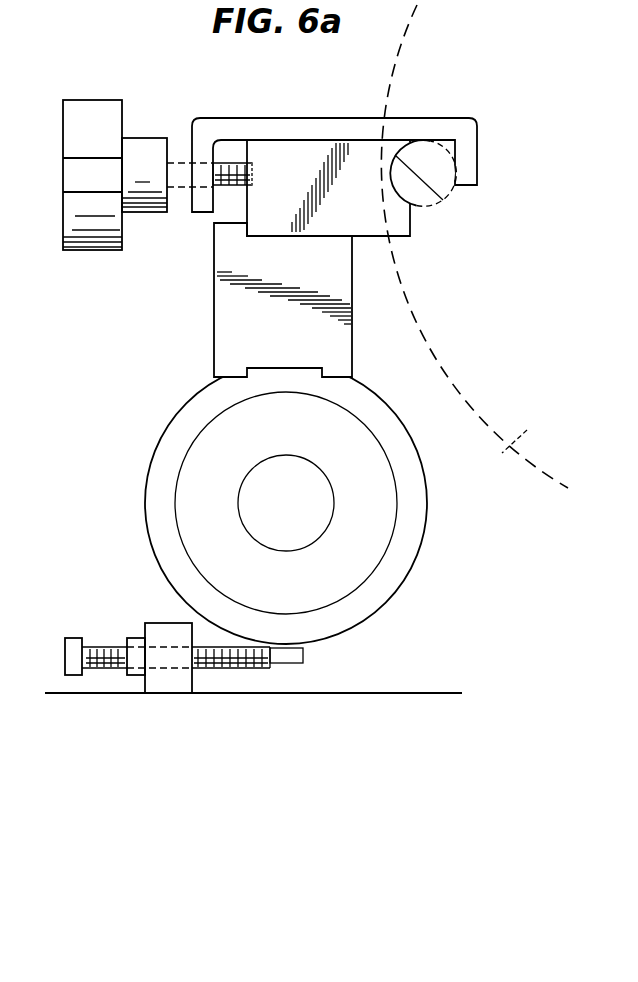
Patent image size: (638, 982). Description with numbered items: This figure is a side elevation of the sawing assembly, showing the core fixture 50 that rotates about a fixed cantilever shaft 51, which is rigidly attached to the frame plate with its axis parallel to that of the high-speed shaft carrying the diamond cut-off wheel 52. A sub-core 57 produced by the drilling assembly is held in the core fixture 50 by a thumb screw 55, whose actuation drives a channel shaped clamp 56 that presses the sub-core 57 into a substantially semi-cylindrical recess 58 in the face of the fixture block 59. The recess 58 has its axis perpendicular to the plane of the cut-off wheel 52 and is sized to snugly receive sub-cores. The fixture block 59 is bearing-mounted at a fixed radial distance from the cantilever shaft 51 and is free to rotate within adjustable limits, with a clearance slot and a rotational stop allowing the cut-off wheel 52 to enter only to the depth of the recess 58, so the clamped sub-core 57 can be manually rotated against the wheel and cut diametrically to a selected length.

The core fixture 50 is at (312, 150).
The cantilever shaft 51 is at (253, 507).
The diamond cut-off wheel 52 is at (512, 446).
The thumb screw 55 is at (75, 125).
The channel shaped clamp 56 is at (242, 125).
The sub-core 57 is at (432, 150).
The semi-cylindrical recess 58 is at (440, 195).
The fixture block 59 is at (267, 220).